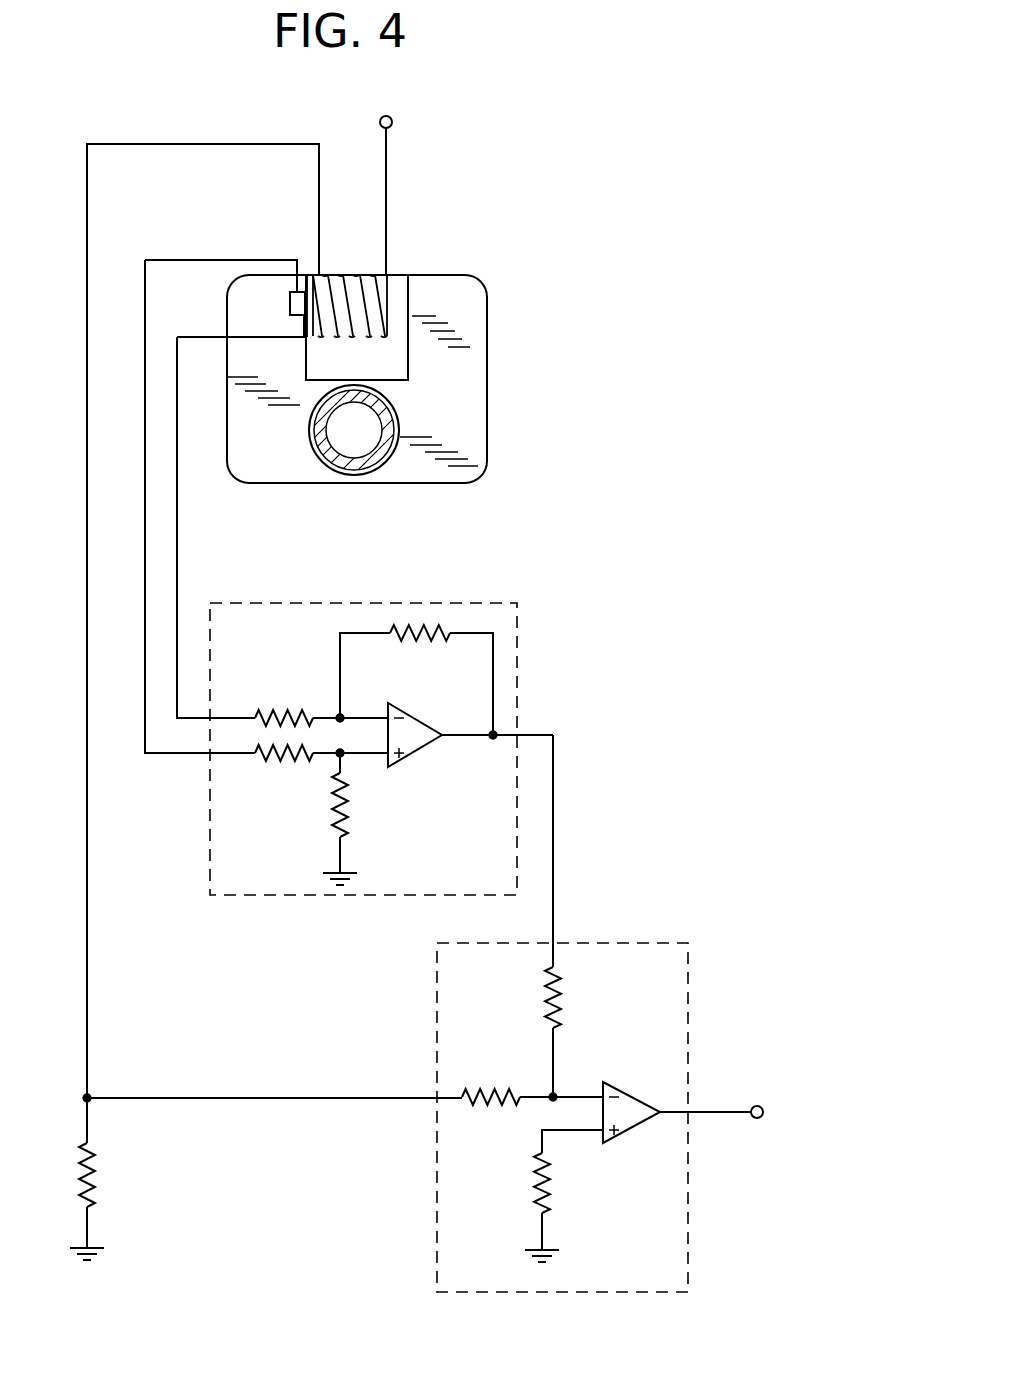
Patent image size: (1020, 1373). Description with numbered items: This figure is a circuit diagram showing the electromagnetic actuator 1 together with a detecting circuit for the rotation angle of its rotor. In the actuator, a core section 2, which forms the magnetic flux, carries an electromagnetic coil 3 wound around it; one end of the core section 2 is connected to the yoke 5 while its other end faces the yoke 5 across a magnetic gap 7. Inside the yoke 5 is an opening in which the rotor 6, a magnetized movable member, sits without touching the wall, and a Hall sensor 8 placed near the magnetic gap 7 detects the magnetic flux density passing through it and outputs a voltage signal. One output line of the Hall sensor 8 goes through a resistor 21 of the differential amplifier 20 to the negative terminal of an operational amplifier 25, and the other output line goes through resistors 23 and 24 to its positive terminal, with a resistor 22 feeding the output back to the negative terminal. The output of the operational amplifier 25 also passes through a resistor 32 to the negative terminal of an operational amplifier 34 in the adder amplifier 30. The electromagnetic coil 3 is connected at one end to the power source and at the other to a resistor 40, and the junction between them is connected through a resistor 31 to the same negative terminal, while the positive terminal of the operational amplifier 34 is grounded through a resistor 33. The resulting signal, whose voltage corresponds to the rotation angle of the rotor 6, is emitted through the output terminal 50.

The electromagnetic actuator 1 is at (500, 302).
The core section 2 is at (400, 310).
The electromagnetic coil 3 is at (388, 292).
The yoke 5 is at (457, 368).
The rotor 6 is at (360, 465).
The magnetic gap 7 is at (310, 272).
The Hall sensor 8 is at (290, 298).
The differential amplifier 20 is at (518, 616).
The resistor 21 is at (290, 708).
The resistor 22 is at (434, 640).
The resistor 23 is at (285, 762).
The resistor 24 is at (350, 808).
The operational amplifier 25 is at (430, 745).
The adder amplifier 30 is at (690, 975).
The resistor 31 is at (494, 1086).
The resistor 32 is at (548, 992).
The resistor 33 is at (538, 1180).
The operational amplifier 34 is at (628, 1132).
The resistor 40 is at (96, 1168).
The output terminal 50 is at (757, 1104).